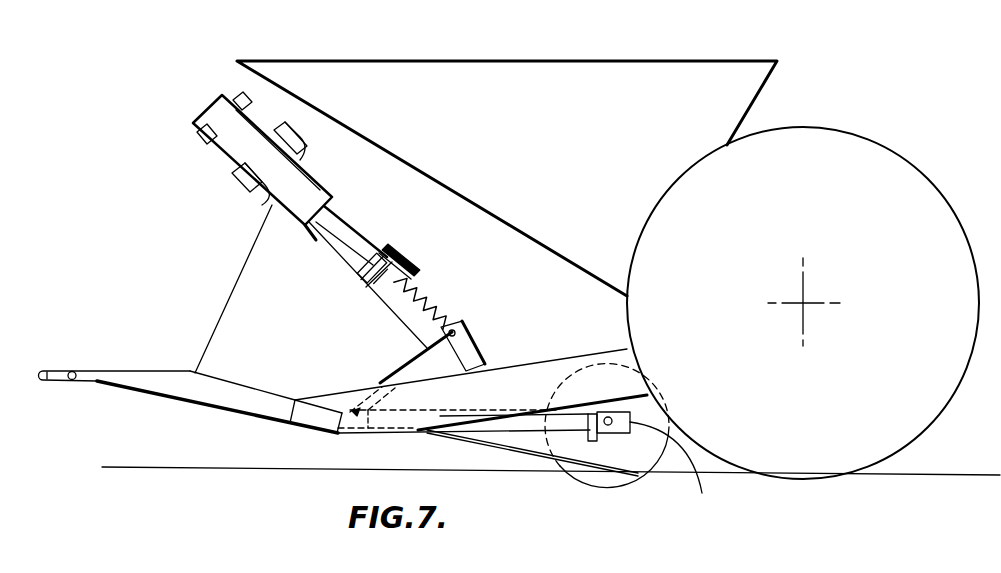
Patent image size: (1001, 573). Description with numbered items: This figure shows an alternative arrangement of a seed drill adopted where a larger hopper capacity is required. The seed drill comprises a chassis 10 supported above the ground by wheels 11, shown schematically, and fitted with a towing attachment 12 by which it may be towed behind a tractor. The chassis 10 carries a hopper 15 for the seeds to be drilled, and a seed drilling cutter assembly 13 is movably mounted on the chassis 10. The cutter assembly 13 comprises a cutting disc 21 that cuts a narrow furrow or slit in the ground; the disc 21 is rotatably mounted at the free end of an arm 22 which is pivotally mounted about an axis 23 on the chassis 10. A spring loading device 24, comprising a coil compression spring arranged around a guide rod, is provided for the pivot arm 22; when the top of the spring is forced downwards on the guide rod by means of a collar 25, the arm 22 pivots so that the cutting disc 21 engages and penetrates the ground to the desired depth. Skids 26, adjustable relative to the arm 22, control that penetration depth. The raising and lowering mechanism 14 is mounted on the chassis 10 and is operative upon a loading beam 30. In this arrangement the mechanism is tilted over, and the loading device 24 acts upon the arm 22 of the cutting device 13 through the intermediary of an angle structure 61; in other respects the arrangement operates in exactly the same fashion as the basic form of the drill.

The chassis 10 is at (427, 390).
The wheels 11 is at (902, 185).
The towing attachment 12 is at (66, 370).
The seed drilling cutter assembly 13 is at (642, 452).
The mechanism 14 is at (262, 208).
The hopper 15 is at (592, 56).
The cutting disc 21 is at (620, 450).
The arm 22 is at (674, 470).
The axis 23 is at (358, 431).
The spring loading device 24 is at (440, 307).
The collar 25 is at (368, 262).
The skids 26 is at (585, 470).
The loading beam 30 is at (422, 262).
The angle structure 61 is at (480, 349).